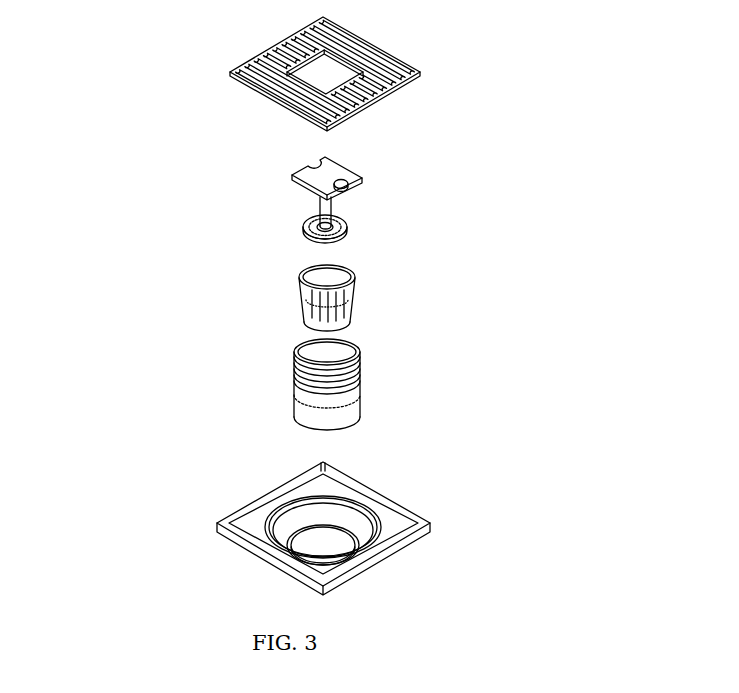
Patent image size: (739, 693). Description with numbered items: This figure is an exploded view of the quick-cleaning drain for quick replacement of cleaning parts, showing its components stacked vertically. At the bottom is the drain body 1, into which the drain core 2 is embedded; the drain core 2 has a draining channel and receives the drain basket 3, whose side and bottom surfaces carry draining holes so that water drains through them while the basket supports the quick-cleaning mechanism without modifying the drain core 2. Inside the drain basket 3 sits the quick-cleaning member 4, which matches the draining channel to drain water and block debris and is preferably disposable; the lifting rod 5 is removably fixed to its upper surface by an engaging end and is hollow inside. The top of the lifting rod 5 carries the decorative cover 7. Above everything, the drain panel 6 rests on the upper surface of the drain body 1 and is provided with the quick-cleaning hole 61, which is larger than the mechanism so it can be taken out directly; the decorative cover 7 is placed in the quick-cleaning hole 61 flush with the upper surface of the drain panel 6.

The drain body 1 is at (248, 530).
The drain core 2 is at (307, 392).
The drain basket 3 is at (300, 288).
The quick-cleaning member 4 is at (305, 223).
The lifting rod 5 is at (345, 223).
The drain panel 6 is at (377, 97).
The quick-cleaning hole 61 is at (278, 53).
The decorative cover 7 is at (328, 168).